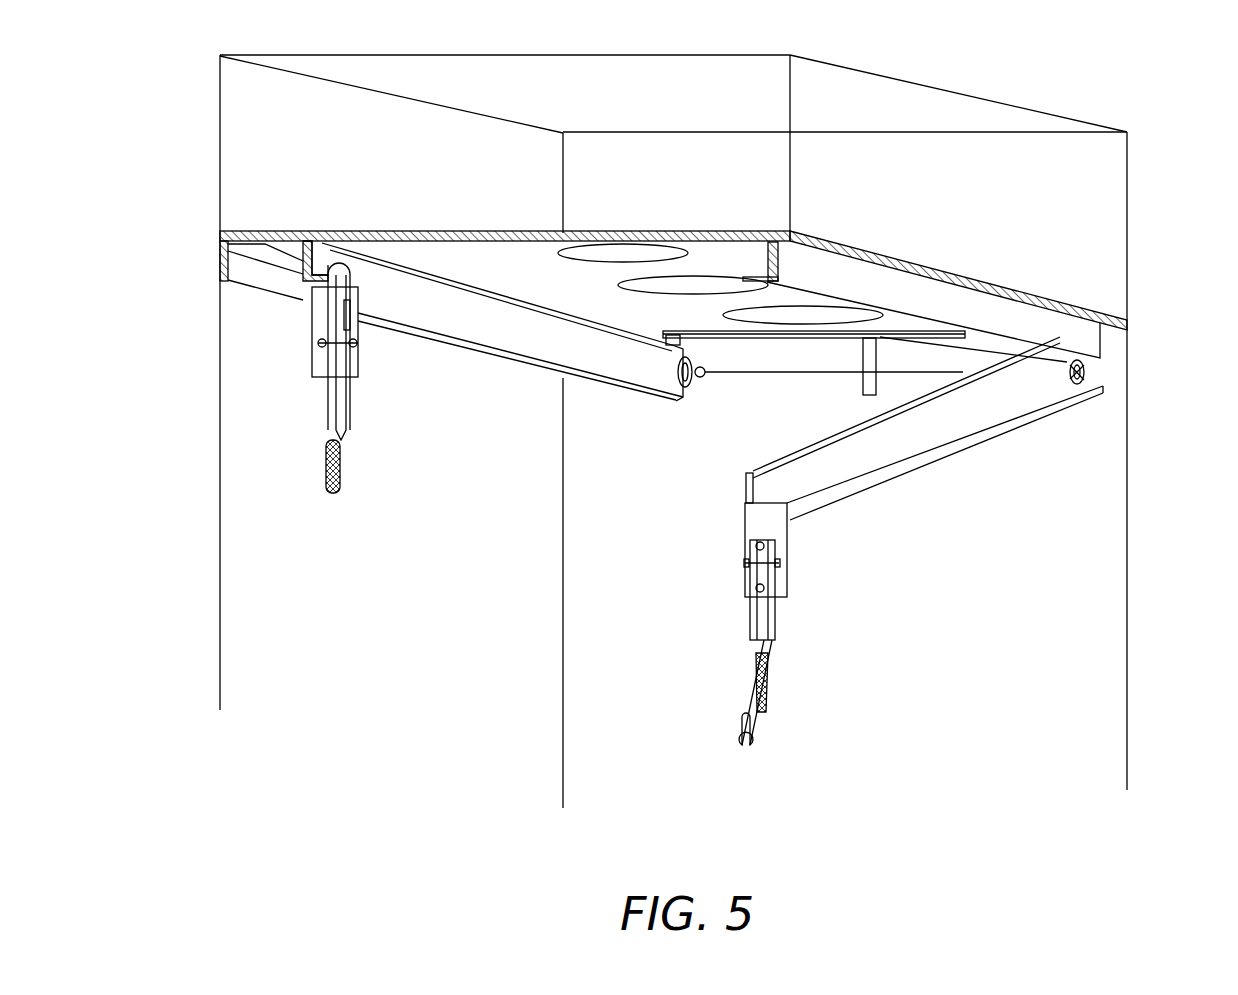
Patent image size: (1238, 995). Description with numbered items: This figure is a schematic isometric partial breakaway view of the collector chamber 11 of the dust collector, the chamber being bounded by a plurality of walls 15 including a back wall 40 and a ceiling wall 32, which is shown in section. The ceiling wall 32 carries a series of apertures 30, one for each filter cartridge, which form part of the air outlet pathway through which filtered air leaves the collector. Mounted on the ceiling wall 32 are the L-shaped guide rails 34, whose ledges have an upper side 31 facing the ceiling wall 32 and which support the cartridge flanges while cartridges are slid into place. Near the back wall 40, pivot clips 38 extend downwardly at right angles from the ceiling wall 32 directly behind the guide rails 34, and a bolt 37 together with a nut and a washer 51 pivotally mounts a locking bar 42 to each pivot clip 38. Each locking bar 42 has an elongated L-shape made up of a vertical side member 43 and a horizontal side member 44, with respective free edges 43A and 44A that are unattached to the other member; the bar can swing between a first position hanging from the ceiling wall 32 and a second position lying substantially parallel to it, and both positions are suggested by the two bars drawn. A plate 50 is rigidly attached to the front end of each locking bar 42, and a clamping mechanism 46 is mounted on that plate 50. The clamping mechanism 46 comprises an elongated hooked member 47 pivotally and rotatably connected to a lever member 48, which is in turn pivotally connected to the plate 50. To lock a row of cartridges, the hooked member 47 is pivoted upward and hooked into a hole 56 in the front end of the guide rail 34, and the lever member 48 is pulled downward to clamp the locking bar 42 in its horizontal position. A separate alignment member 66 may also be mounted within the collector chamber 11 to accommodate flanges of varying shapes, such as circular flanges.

The collector chamber 11 is at (603, 772).
The walls 15 is at (282, 597).
The apertures 30 is at (608, 255).
The upper side 31 is at (775, 242).
The ceiling wall 32 is at (458, 258).
The guide rails 34 is at (318, 265).
The bolt 37 is at (1090, 375).
The pivot clips 38 is at (690, 352).
The back wall 40 is at (1050, 700).
The locking bar 42 is at (455, 372).
The vertical side member 43 is at (457, 325).
The free edge 43A is at (765, 468).
The horizontal side member 44 is at (612, 388).
The free edge 44A is at (872, 490).
The clamping mechanism 46 is at (360, 413).
The hooked member 47 is at (332, 298).
The lever member 48 is at (338, 480).
The plate 50 is at (358, 370).
The washer 51 is at (667, 400).
The holes 56 is at (750, 279).
The alignment member 66 is at (878, 348).